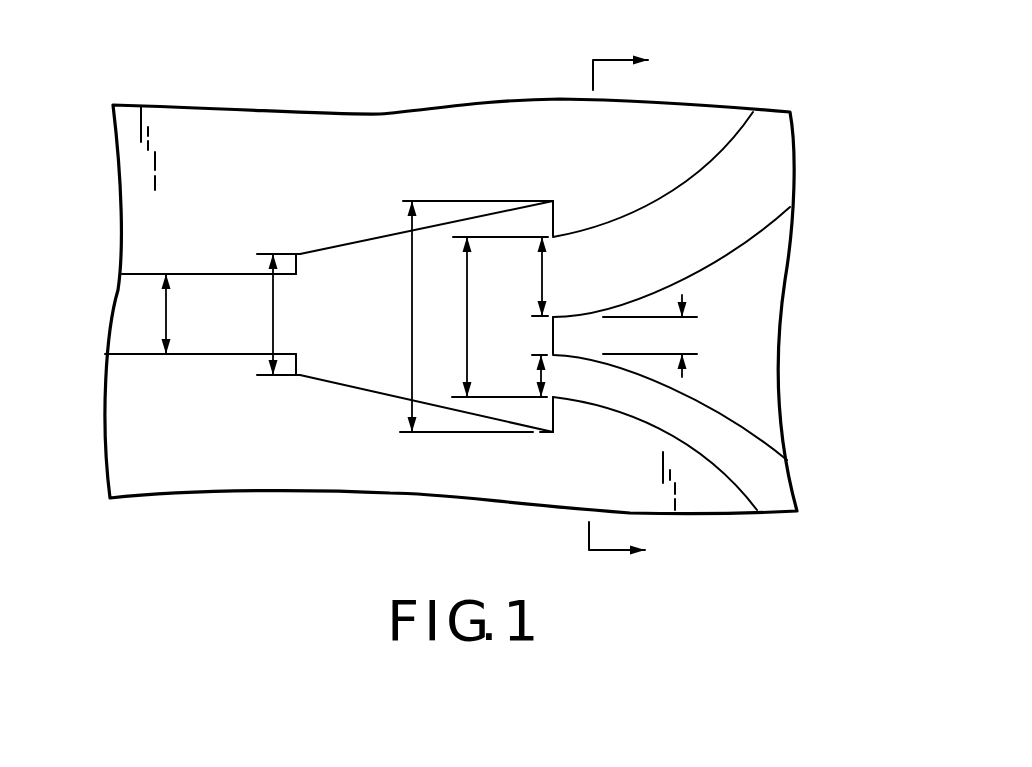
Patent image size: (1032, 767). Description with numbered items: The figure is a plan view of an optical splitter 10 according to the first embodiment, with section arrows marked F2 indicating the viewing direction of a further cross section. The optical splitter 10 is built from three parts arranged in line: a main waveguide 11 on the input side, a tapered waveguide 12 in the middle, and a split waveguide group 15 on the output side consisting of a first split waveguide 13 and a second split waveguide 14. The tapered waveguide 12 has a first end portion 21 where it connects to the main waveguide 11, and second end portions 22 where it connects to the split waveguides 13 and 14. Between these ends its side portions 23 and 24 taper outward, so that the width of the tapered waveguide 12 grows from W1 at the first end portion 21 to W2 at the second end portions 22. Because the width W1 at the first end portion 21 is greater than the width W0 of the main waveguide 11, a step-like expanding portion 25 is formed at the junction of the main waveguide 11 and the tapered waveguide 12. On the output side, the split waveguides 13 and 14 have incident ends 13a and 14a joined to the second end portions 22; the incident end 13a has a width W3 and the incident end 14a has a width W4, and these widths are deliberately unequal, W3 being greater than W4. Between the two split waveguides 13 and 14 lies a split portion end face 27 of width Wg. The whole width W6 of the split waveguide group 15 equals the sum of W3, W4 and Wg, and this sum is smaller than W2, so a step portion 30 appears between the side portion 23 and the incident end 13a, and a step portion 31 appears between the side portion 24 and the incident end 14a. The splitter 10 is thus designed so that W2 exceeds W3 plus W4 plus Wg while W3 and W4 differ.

The optical splitter 10 is at (827, 263).
The main waveguide 11 is at (130, 313).
The tapered waveguide 12 is at (441, 277).
The first split waveguide 13 is at (705, 183).
The incident end of first split waveguide 13a is at (558, 282).
The second split waveguide 14 is at (702, 435).
The incident end of second split waveguide 14a is at (555, 373).
The split waveguide group 15 is at (681, 170).
The first end portion 21 is at (300, 378).
The second end portions 22 is at (549, 434).
The side portion 23 is at (355, 250).
The side portion 24 is at (363, 386).
The step-like expanding portion 25 is at (306, 251).
The split portion end face 27 is at (553, 320).
The step portion 30 is at (558, 218).
The step portion 31 is at (557, 415).
The width of main waveguide W0 is at (170, 314).
The width of tapered waveguide at first end portion W1 is at (277, 297).
The width of tapered waveguide at second end portions W2 is at (410, 357).
The width of incident end of first split waveguide W3 is at (537, 280).
The width of incident end of second split waveguide W4 is at (537, 368).
The whole width of split waveguide group W6 is at (462, 330).
The width of split portion end face Wg is at (690, 340).
The section line F2 is at (618, 307).